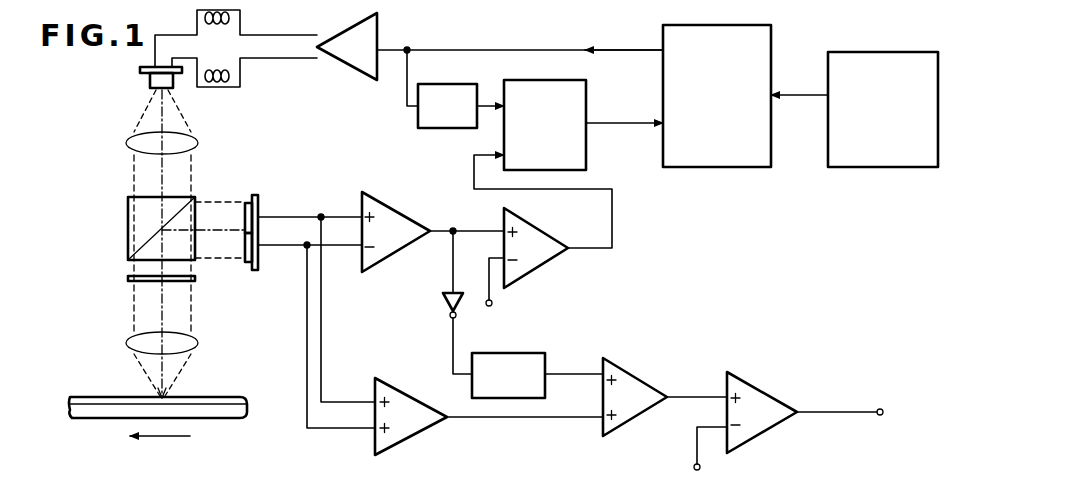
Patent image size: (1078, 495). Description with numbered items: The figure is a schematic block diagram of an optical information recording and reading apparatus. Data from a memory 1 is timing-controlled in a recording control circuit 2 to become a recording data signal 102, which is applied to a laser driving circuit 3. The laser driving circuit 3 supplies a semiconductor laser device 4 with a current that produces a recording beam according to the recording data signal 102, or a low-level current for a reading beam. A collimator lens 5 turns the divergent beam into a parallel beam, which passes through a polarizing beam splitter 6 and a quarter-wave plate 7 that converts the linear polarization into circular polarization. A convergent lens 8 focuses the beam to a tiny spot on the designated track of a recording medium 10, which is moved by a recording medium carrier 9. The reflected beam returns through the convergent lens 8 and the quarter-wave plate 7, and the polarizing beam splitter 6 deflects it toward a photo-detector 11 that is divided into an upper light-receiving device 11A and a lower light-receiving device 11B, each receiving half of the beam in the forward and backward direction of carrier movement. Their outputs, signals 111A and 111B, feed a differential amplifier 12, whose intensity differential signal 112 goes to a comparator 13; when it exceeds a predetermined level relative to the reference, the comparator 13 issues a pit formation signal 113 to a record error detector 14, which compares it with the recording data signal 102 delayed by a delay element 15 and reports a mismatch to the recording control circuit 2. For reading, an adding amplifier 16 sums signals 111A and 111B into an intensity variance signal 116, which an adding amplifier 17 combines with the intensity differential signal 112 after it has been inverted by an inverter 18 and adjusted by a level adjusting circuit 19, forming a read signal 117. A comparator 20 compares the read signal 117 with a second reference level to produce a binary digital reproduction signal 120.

The memory 1 is at (875, 54).
The recording control circuit 2 is at (773, 62).
The laser driving circuit 3 is at (345, 26).
The semiconductor laser device 4 is at (148, 80).
The collimator lens 5 is at (128, 148).
The polarizing beam splitter 6 is at (128, 220).
The quarter-wave plate 7 is at (128, 278).
The convergent lens 8 is at (128, 343).
The recording medium carrier 9 is at (230, 422).
The recording medium 10 is at (232, 394).
The photo-detector 11 is at (257, 200).
The upper light-receiving device 11A is at (243, 212).
The lower light-receiving device 11B is at (243, 258).
The signal 111A is at (296, 215).
The signal 111B is at (283, 248).
The differential amplifier 12 is at (390, 200).
The intensity differential signal 112 is at (462, 226).
The comparator 13 is at (545, 228).
The pit formation signal 113 is at (615, 228).
The record error detector 14 is at (588, 80).
The delay element 15 is at (443, 86).
The adding amplifier 16 is at (410, 435).
The intensity variance signal 116 is at (518, 420).
The adding amplifier 17 is at (633, 425).
The read signal 117 is at (678, 392).
The inverter 18 is at (440, 298).
The level adjusting circuit 19 is at (538, 352).
The comparator 20 is at (750, 384).
The digital reproduction signal 120 is at (826, 408).
The recording data signal 102 is at (495, 42).